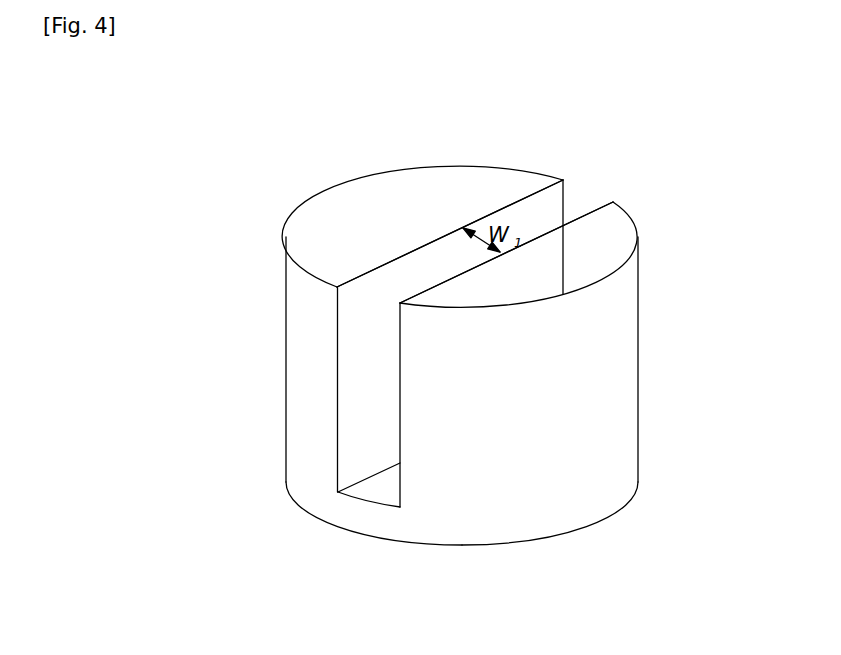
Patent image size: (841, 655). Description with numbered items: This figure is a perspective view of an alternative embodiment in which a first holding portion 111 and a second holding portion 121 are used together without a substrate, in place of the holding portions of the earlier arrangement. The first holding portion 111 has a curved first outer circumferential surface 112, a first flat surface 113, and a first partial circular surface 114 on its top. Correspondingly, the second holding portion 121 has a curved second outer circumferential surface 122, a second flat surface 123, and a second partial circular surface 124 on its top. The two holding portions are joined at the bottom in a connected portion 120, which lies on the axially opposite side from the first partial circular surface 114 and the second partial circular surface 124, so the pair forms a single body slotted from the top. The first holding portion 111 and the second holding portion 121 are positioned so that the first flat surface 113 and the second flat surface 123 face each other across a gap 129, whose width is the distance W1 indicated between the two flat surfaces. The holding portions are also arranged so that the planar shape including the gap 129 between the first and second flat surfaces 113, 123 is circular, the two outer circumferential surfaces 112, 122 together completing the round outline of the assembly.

The first holding portion 111 is at (378, 320).
The first outer circumferential surface 112 is at (298, 307).
The first flat surface 113 is at (365, 397).
The first partial circular surface 114 is at (402, 197).
The connected portion 120 is at (430, 382).
The second holding portion 121 is at (537, 378).
The second outer circumferential surface 122 is at (613, 427).
The second flat surface 123 is at (398, 440).
The second partial circular surface 124 is at (590, 233).
The gap 129 is at (358, 462).